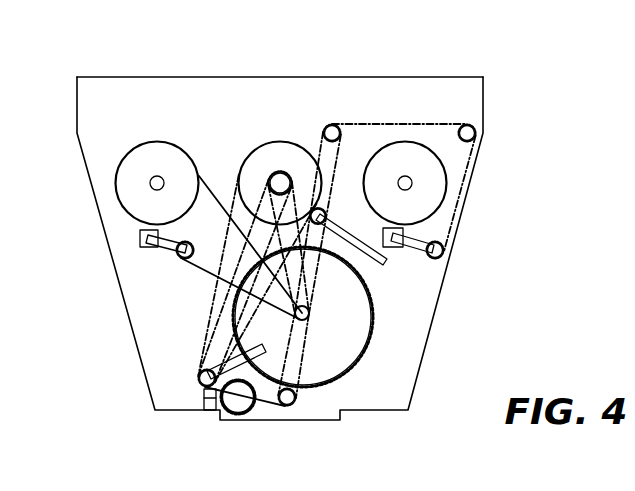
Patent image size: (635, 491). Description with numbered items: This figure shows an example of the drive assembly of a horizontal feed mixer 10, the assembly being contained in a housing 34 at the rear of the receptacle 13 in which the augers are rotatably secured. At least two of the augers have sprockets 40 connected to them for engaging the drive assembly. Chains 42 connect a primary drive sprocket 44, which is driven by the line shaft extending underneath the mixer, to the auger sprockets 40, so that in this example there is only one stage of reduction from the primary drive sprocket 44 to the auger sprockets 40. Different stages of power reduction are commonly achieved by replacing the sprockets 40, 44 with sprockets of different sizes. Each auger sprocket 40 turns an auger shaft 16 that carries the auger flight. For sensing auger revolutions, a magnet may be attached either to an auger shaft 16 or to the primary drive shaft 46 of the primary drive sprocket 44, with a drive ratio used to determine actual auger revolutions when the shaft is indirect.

The feed mixer 10 is at (263, 57).
The receptacle 13 is at (365, 76).
The housing 34 is at (77, 118).
The sprockets 40 is at (162, 156).
The shaft 16 is at (142, 186).
The chains 42 is at (127, 153).
The primary drive sprocket 44 is at (315, 318).
The primary drive shaft 46 is at (310, 310).